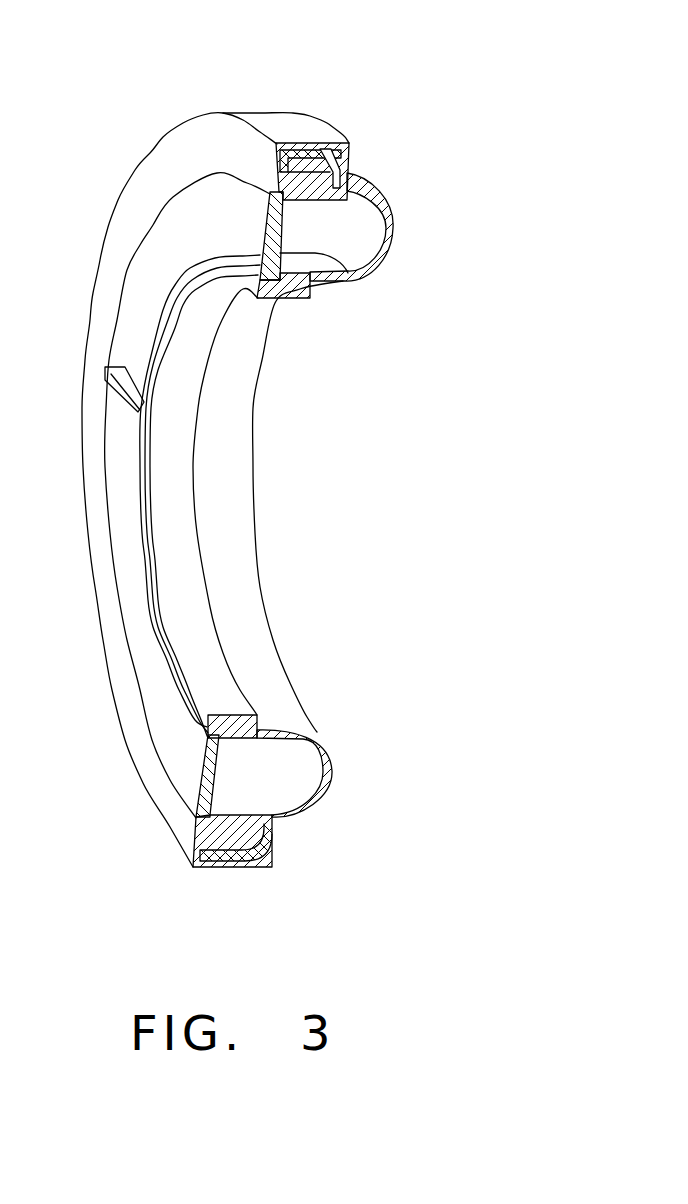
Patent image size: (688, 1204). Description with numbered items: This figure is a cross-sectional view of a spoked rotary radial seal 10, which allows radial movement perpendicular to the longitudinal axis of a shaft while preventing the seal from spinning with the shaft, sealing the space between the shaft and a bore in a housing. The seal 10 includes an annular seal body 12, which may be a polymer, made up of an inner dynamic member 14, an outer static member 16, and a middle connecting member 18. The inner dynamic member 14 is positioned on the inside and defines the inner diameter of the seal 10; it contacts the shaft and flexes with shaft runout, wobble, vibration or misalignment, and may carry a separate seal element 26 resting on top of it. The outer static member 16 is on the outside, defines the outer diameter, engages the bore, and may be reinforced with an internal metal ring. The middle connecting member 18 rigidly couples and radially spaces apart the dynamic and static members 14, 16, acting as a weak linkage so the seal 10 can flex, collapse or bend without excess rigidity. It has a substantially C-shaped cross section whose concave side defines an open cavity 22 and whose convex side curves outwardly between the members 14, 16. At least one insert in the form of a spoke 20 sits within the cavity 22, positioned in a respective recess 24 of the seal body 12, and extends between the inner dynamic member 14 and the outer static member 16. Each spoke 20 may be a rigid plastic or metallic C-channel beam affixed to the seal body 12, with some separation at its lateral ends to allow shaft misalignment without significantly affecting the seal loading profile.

The radial seal 10 is at (424, 163).
The seal body 12 is at (297, 113).
The inner dynamic member 14 is at (216, 667).
The outer static member 16 is at (259, 870).
The middle connecting member 18 is at (326, 786).
The spoke 20 is at (108, 367).
The open cavity 22 is at (233, 180).
The recess 24 is at (188, 826).
The separate seal element 26 is at (187, 609).